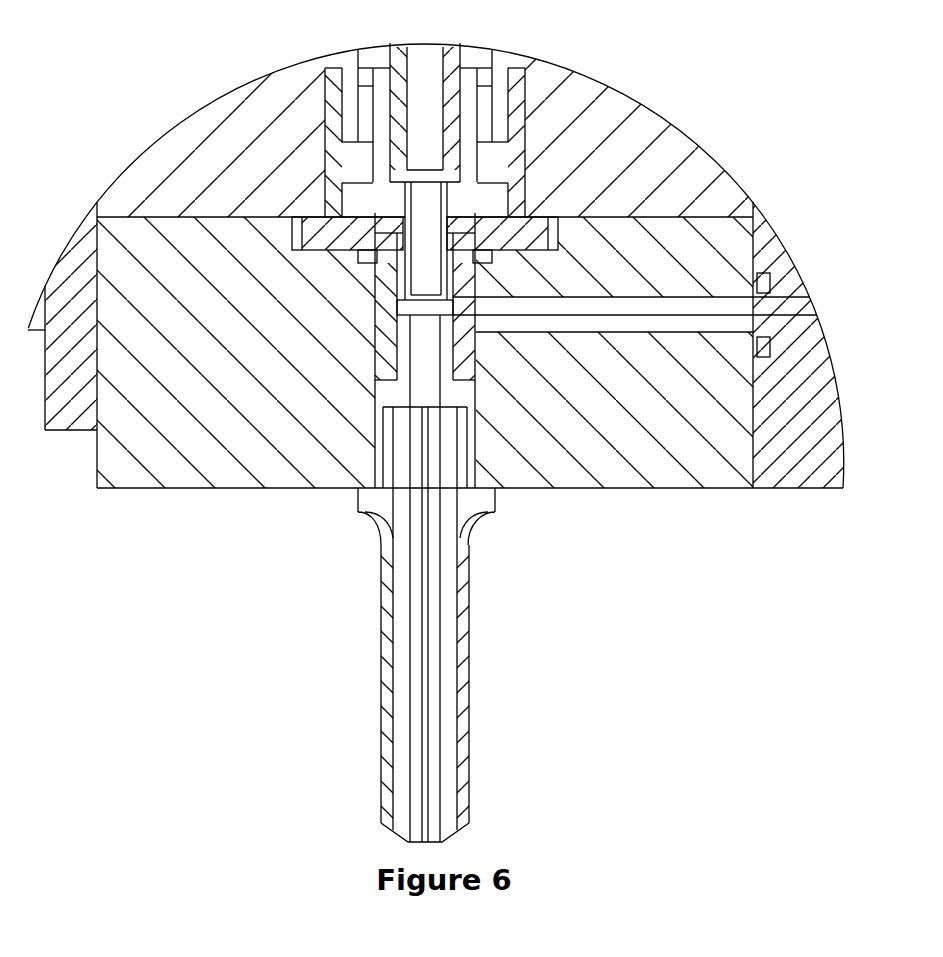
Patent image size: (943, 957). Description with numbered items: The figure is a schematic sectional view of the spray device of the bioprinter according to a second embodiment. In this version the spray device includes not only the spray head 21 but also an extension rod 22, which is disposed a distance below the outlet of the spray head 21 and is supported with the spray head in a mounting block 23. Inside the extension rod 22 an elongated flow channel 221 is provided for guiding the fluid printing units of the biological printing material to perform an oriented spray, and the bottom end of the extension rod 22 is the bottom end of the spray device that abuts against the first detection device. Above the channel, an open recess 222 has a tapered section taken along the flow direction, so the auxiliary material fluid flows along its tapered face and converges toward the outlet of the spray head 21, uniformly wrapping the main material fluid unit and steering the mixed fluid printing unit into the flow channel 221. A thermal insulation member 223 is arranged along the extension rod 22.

The spray head 21 is at (457, 342).
The extension rod 22 is at (458, 503).
The mounting block 23 is at (310, 463).
The flow channel 221 is at (425, 603).
The open recess 222 is at (377, 350).
The thermal insulation member 223 is at (463, 568).